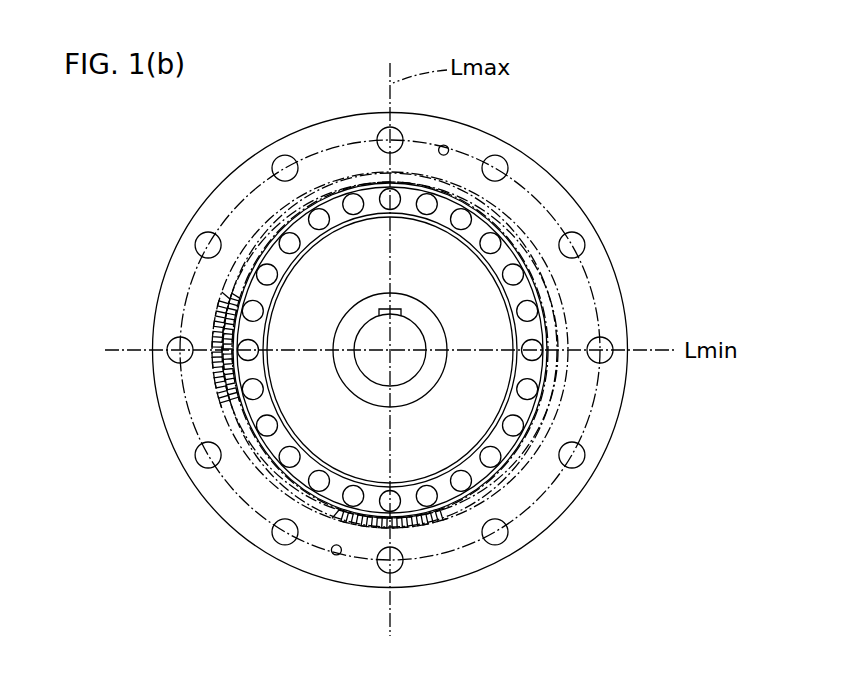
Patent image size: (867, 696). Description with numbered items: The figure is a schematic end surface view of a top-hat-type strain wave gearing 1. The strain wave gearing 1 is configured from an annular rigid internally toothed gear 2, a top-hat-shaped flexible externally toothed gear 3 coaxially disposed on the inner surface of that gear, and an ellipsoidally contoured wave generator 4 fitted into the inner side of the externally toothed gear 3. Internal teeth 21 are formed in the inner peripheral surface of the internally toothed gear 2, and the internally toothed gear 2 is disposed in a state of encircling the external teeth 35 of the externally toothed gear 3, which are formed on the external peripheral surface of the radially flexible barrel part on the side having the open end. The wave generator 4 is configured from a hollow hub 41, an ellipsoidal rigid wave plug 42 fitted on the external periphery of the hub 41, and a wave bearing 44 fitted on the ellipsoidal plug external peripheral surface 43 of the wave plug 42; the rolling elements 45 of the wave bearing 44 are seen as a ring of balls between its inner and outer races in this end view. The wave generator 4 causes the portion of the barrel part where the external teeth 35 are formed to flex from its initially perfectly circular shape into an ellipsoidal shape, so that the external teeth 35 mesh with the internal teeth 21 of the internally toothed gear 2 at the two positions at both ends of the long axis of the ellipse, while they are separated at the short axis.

The strain wave gearing 1 is at (267, 122).
The rigid internally toothed gear 2 is at (173, 242).
The internal teeth 21 is at (230, 292).
The flexible externally toothed gear 3 is at (218, 390).
The external teeth 35 is at (217, 362).
The wave generator 4 is at (455, 373).
The hollow hub 41 is at (410, 388).
The rigid wave plug 42 is at (460, 437).
The plug external peripheral surface 43 is at (500, 447).
The wave bearing 44 is at (537, 373).
The balls 45 is at (516, 425).